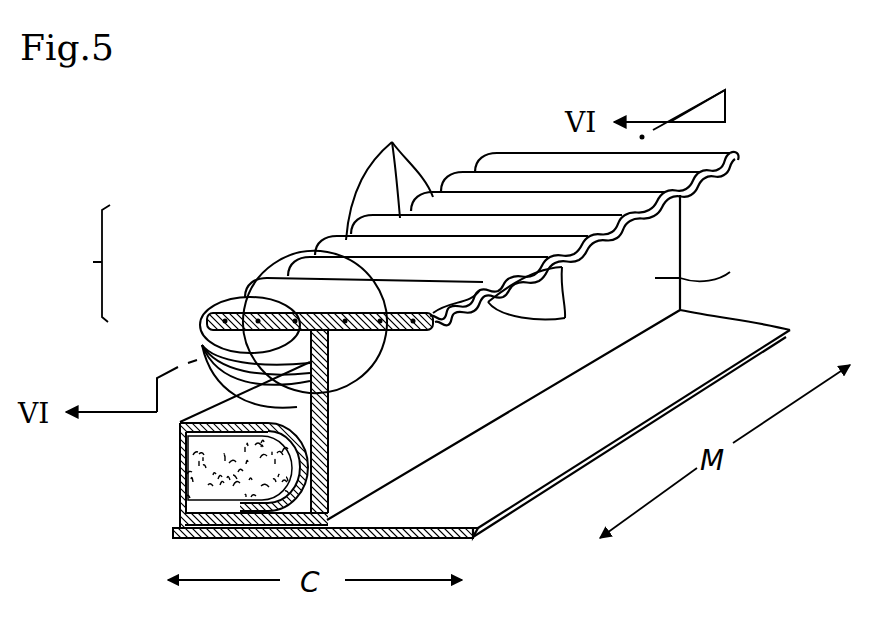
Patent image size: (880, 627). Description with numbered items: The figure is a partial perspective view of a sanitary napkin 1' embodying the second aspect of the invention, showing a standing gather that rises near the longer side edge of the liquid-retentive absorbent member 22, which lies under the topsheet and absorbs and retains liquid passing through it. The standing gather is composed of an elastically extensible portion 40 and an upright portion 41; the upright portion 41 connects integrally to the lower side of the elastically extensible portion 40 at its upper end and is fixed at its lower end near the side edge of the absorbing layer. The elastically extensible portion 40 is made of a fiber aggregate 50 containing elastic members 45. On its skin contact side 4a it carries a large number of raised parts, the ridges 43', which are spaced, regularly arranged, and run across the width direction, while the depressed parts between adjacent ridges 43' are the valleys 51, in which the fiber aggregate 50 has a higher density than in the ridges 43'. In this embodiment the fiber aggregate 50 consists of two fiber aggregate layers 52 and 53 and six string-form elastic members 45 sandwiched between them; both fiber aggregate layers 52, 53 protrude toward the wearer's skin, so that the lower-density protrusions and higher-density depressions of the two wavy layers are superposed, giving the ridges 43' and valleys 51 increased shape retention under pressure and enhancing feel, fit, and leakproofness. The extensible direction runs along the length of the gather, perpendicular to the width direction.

The sanitary napkin 1' is at (360, 427).
The skin contact side 4a is at (501, 186).
The absorbent member 22 is at (182, 470).
The elastically extensible portion 40 is at (716, 181).
The upright portion 41 is at (713, 258).
The ridges 43' is at (389, 172).
The elastic members 45 is at (202, 345).
The fiber aggregate 50 is at (80, 263).
The valleys 51 is at (542, 304).
The fiber aggregate layer 52 is at (300, 252).
The fiber aggregate layer 53 is at (450, 307).